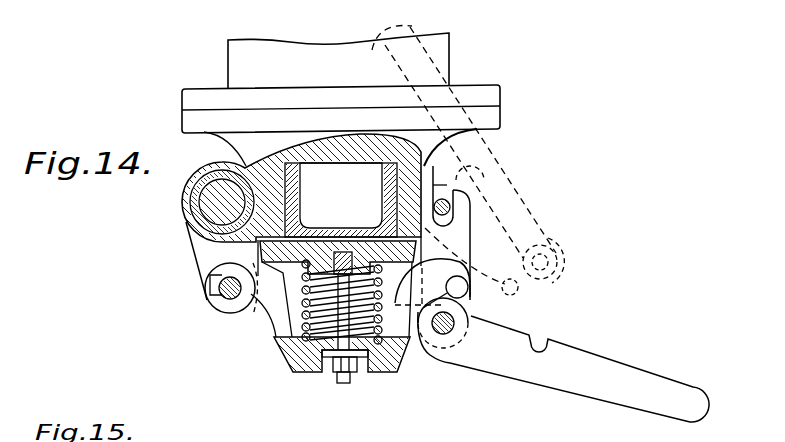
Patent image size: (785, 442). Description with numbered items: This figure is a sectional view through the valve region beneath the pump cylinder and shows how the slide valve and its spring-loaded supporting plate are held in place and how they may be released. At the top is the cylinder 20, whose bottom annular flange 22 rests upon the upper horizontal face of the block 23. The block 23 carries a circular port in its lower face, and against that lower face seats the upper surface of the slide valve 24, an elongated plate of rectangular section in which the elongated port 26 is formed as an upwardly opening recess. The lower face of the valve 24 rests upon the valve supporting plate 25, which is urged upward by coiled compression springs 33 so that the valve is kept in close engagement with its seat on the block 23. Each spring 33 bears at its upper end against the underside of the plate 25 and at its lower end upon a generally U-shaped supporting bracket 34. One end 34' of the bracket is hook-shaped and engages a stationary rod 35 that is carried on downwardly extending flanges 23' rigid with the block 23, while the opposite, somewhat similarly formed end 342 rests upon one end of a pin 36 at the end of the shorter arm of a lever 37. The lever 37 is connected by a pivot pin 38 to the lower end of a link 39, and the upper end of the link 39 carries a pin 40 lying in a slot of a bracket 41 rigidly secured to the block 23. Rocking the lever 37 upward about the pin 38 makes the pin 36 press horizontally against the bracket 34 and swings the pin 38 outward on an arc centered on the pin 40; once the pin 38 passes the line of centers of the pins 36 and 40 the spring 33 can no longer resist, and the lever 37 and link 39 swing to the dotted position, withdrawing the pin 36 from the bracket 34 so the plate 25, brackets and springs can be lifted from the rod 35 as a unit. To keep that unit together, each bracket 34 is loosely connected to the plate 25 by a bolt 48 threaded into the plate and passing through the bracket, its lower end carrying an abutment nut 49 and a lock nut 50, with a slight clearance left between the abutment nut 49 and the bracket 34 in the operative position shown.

The cylinder 20 is at (235, 57).
The annular flange 22 is at (197, 97).
The block 23 is at (301, 152).
The downwardly extending flanges 23' is at (182, 213).
The slide valve 24 is at (402, 173).
The valve supporting plate 25 is at (218, 259).
The elongated port 26 is at (318, 177).
The coiled compression springs 33 is at (303, 323).
The supporting bracket 34 is at (333, 327).
The hook-shaped end of bracket 34' is at (171, 277).
The stationary rod 35 is at (230, 290).
The pin 36 is at (470, 297).
The lever 37 is at (523, 373).
The pivot pin 38 is at (443, 330).
The link 39 is at (472, 237).
The pin 40 is at (446, 192).
The bracket 41 is at (462, 217).
The end of bracket 342 is at (468, 290).
The bolt 48 is at (343, 383).
The abutment nut 49 is at (358, 364).
The lock nut 50 is at (333, 375).